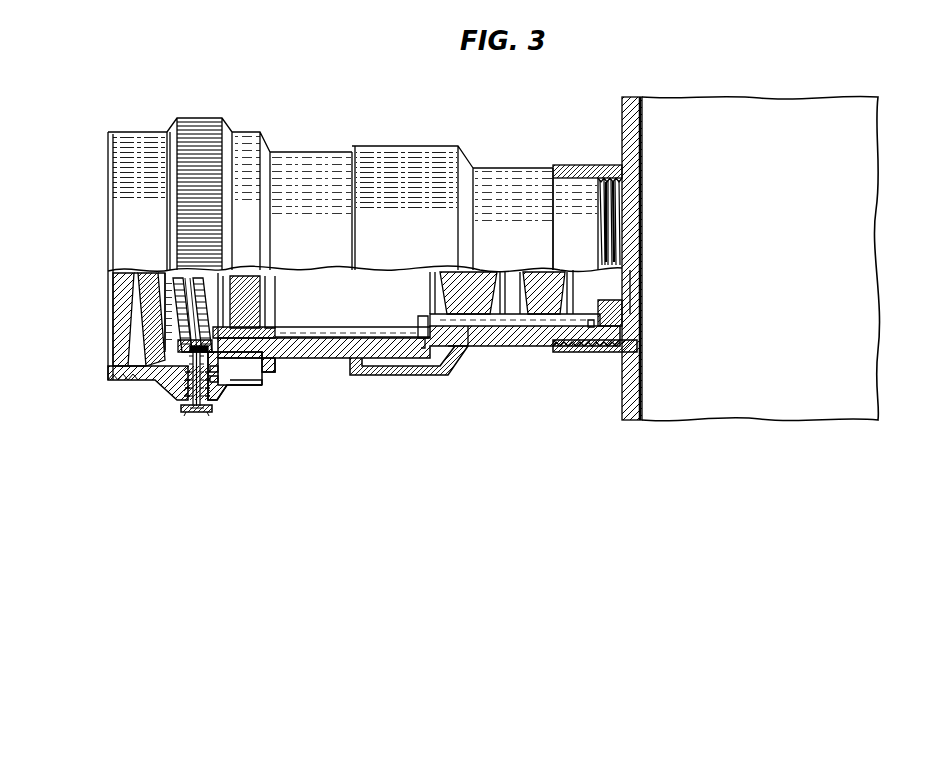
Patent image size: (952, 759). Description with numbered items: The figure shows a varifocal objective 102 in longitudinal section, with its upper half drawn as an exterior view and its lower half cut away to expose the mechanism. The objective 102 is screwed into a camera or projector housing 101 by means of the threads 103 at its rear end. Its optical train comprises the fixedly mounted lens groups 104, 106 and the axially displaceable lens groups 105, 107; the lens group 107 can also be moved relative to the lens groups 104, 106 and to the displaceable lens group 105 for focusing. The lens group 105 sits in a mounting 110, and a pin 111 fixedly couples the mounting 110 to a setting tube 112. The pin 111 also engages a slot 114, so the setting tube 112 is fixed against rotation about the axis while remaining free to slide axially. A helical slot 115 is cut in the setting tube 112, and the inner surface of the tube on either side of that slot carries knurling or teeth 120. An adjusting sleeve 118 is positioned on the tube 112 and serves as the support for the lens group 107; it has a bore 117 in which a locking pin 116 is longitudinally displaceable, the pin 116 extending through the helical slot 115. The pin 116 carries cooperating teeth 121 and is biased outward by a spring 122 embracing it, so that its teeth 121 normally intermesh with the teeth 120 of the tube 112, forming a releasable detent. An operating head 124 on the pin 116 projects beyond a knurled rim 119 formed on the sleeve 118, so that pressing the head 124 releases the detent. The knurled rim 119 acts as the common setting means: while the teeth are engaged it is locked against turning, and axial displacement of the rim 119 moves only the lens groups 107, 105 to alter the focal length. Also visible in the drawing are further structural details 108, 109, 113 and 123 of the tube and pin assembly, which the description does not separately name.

The camera or projector housing 101 is at (772, 100).
The objective 102 is at (425, 157).
The threads 103 is at (608, 170).
The fixedly mounted lens group 104 is at (538, 282).
The axially displaceable lens group 105 is at (445, 283).
The fixedly mounted lens group 106 is at (258, 285).
The axially displaceable lens group 107 is at (128, 298).
The retaining screw 108 is at (620, 322).
The threaded inner sleeve 109 is at (535, 347).
The mounting 110 is at (495, 340).
The pin 111 is at (420, 342).
The setting tube 112 is at (332, 345).
The bearing plate 113 is at (225, 334).
The slot 114 is at (368, 330).
The helical slot 115 is at (183, 310).
The locking pin 116 is at (200, 412).
The bore 117 is at (212, 370).
The adjusting sleeve 118 is at (264, 374).
The knurled rim 119 is at (204, 128).
The teeth 120 is at (180, 279).
The teeth 121 is at (262, 388).
The spring 122 is at (183, 386).
The spring washer 123 is at (214, 380).
The operating head 124 is at (190, 415).